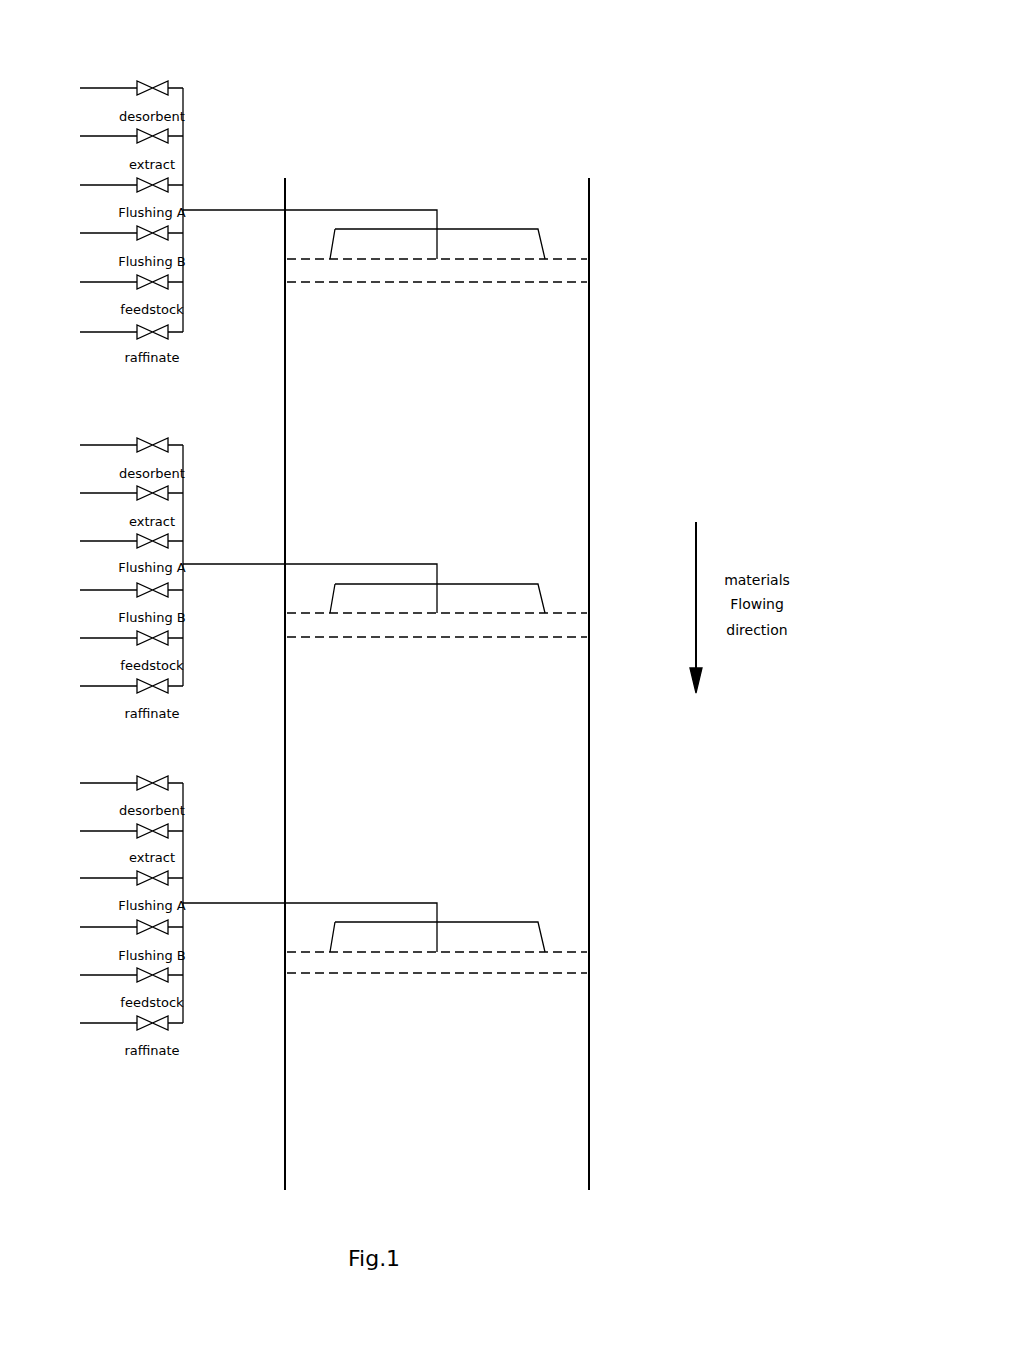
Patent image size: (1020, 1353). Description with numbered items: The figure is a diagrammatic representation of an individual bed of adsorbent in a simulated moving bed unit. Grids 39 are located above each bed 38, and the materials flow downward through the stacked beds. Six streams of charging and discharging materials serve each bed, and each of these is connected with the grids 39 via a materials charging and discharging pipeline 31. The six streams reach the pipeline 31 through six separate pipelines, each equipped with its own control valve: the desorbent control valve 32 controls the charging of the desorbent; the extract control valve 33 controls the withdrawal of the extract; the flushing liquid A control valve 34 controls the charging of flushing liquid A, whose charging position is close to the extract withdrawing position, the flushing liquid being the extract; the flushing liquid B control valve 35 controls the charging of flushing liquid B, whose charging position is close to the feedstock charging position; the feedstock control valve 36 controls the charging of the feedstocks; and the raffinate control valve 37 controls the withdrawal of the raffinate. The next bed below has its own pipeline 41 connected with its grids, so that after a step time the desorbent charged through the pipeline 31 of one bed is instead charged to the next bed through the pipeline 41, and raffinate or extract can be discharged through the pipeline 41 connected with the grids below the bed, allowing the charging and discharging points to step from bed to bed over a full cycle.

The materials charging and discharging pipeline 31 is at (330, 209).
The desorbent control valve 32 is at (168, 86).
The extract control valve 33 is at (167, 135).
The flushing liquid A control valve 34 is at (166, 183).
The flushing liquid B control valve 35 is at (166, 231).
The feedstock control valve 36 is at (170, 281).
The raffinate control valve 37 is at (170, 330).
The bed 38 is at (558, 395).
The grids 39 is at (570, 275).
The pipeline 41 is at (330, 563).